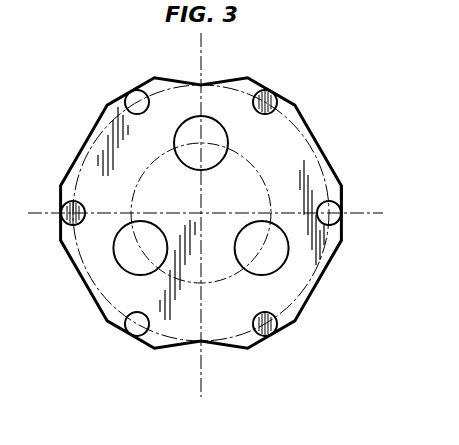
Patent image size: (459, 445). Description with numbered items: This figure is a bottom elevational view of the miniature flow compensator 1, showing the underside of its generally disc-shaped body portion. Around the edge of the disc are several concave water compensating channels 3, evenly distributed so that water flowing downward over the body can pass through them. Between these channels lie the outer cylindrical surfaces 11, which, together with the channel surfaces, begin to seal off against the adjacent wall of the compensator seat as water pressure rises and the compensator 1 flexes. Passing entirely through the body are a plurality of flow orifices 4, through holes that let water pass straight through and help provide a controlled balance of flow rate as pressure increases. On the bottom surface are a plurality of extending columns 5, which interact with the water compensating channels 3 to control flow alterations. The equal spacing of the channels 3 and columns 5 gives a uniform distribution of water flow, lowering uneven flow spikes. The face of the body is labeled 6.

The miniature flow compensator 1 is at (220, 227).
The water compensating channels 3 is at (303, 303).
The flow orifices 4 is at (272, 240).
The extending columns 5 is at (133, 91).
The flange face 6 is at (121, 202).
The outer cylindrical surfaces 11 is at (345, 190).